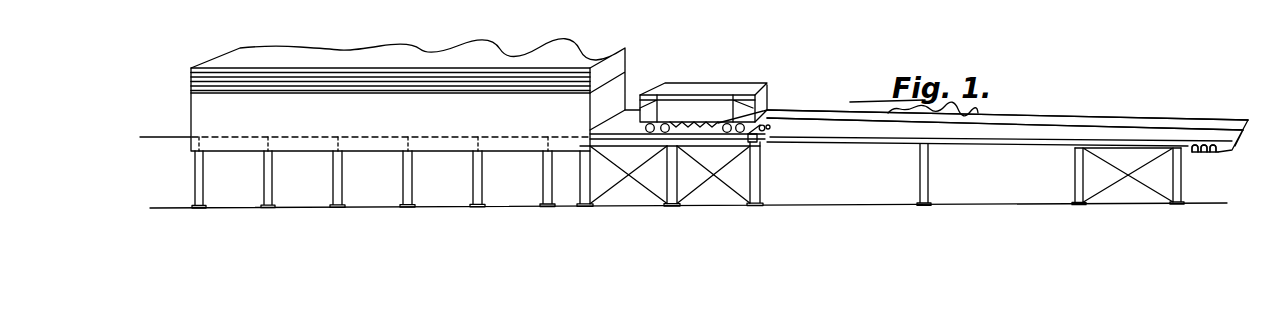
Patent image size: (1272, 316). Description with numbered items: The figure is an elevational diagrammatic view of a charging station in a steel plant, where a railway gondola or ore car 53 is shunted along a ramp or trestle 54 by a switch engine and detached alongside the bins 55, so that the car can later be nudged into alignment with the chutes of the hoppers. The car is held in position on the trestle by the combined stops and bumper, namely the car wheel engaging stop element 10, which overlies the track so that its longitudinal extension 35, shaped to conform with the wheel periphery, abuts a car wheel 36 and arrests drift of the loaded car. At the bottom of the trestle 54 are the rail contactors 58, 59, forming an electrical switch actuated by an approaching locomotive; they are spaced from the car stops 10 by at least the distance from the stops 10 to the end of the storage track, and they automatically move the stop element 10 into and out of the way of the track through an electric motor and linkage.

The car wheel engaging stop element 10 is at (762, 134).
The longitudinal extension 35 is at (760, 125).
The car wheel 36 is at (740, 134).
The ore car 53 is at (710, 93).
The trestle 54 is at (1118, 122).
The bins 55 is at (532, 121).
The rail contactor 58 is at (1213, 152).
The rail contactor 59 is at (1208, 164).